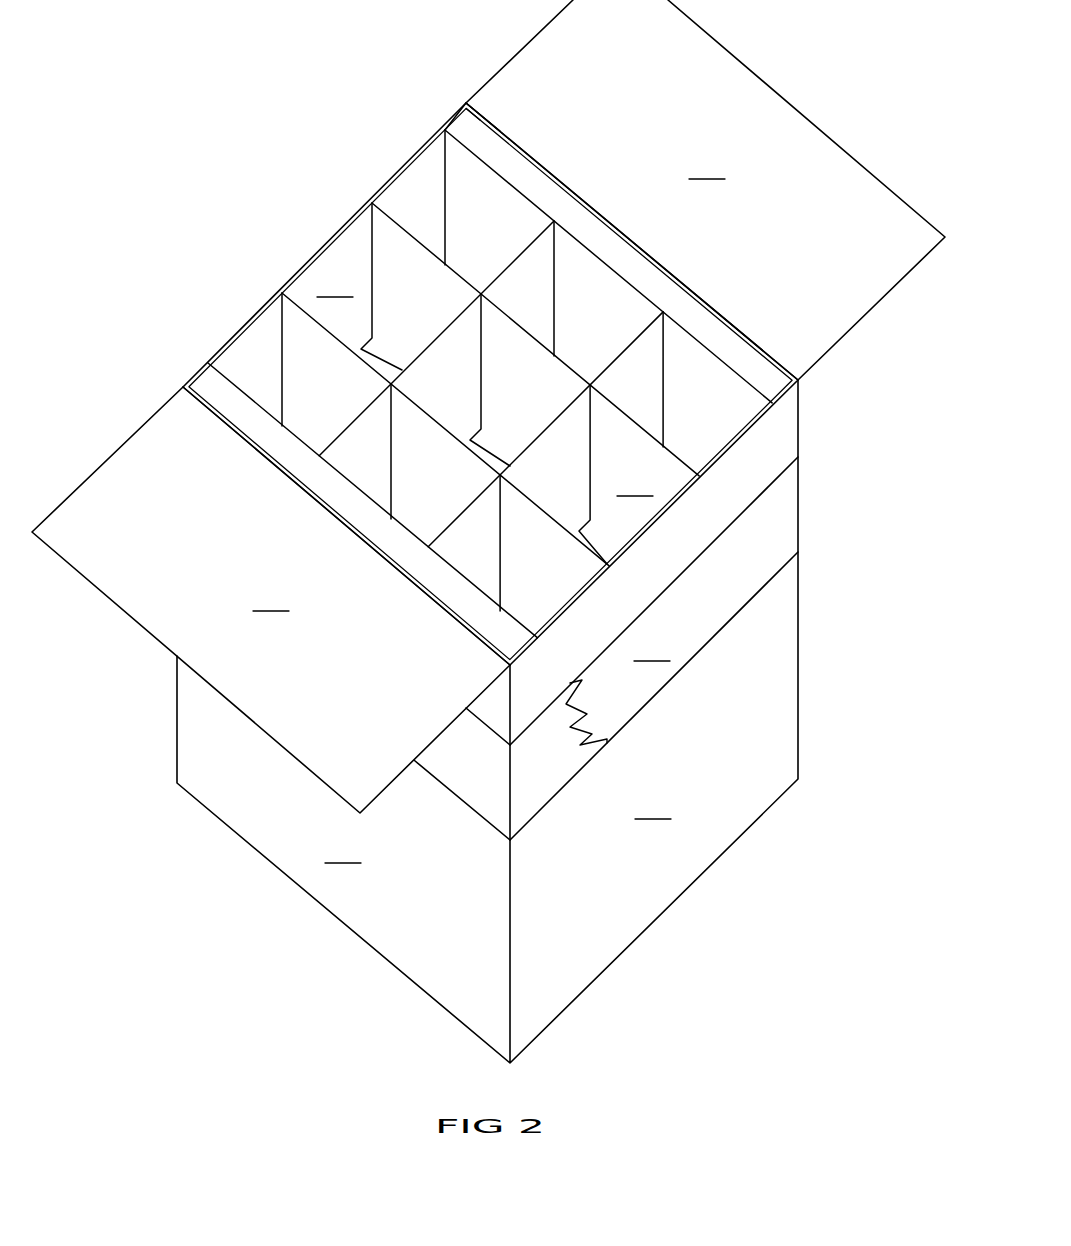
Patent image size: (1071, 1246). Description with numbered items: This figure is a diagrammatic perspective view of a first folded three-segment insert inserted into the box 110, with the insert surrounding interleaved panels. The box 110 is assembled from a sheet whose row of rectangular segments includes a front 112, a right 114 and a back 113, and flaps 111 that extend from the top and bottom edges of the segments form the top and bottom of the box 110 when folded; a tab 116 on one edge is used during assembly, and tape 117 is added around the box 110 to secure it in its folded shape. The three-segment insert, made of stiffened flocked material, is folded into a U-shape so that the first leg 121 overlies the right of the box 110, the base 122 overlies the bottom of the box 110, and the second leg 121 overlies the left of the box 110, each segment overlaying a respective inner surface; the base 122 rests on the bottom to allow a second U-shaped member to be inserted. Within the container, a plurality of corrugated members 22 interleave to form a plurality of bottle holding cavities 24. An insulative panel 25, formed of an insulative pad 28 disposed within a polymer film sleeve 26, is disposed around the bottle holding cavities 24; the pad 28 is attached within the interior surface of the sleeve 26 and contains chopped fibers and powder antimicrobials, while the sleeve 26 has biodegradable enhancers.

The box 110 is at (488, 531).
The flaps 111 is at (488, 406).
The front segment 112 is at (654, 696).
The back segment 113 is at (490, 370).
The right segment 114 is at (417, 786).
The tab 116 is at (494, 650).
The tape 117 is at (654, 601).
The leg 121 is at (243, 387).
The base 122 is at (602, 550).
The corrugated members 22 is at (526, 355).
The bottle holding cavities 24 is at (708, 428).
The insulative panel 25 is at (468, 127).
The polymer film sleeve 26 is at (501, 147).
The insulative pad 28 is at (444, 120).